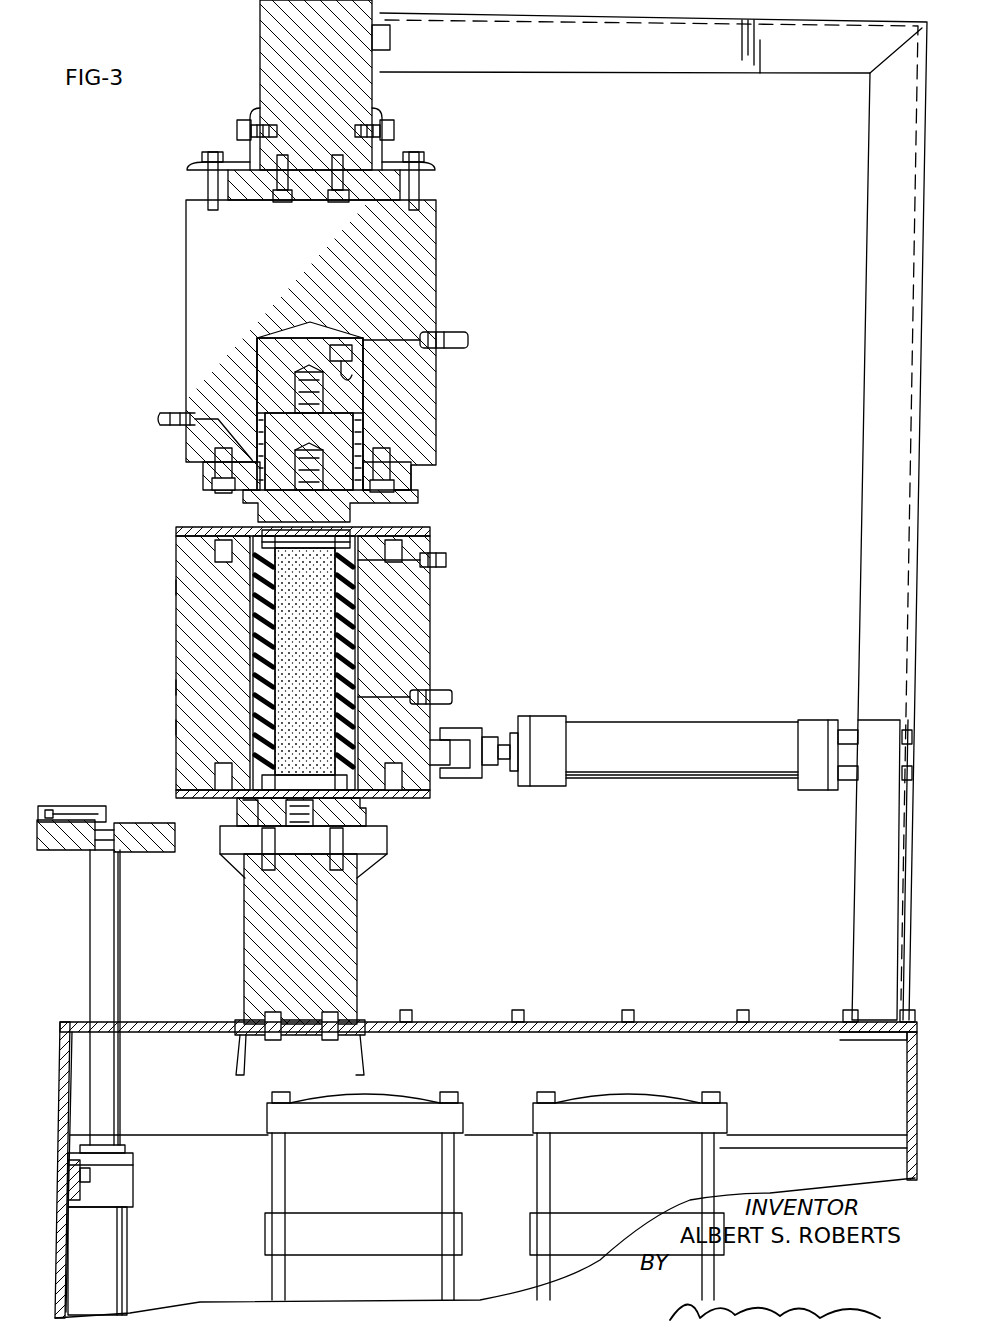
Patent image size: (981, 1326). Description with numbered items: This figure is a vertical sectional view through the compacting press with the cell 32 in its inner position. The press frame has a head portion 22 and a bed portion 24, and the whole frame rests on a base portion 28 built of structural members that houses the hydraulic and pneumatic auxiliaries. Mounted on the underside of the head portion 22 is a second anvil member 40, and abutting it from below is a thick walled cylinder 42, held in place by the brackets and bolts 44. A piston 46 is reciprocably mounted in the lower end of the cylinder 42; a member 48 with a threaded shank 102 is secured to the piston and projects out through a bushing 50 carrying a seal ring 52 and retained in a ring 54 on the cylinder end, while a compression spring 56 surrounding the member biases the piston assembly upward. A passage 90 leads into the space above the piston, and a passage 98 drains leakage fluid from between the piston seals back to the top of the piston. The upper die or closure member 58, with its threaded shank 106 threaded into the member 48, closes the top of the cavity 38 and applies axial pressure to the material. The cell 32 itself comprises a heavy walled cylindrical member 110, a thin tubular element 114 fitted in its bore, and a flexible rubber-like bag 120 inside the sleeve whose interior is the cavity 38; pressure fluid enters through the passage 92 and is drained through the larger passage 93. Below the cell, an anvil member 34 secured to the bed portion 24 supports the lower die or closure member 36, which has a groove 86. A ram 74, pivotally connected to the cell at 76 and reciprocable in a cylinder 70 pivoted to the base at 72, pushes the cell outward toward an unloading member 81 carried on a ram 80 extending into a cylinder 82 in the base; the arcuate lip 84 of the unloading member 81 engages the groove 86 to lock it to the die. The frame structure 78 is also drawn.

The head portion 22 is at (270, 18).
The base portion 24 is at (345, 940).
The base portion 28 is at (60, 1150).
The cell 32 is at (292, 662).
The anvil member 34 is at (372, 848).
The lower die or closure member 36 is at (360, 812).
The cavity 38 is at (284, 615).
The second anvil member 40 is at (380, 185).
The thick walled cylinder 42 is at (428, 250).
The brackets and bolts 44 is at (194, 137).
The piston 46 is at (262, 340).
The member 48 is at (345, 430).
The bushing 50 is at (400, 470).
The seal ring 52 is at (395, 490).
The ring 54 is at (203, 472).
The compression spring 56 is at (360, 445).
The upper die or closure member 58 is at (265, 508).
The cylinder 70 is at (615, 725).
The pivotal connection 72 is at (878, 725).
The ram 74 is at (495, 738).
The pivotal connection 76 is at (460, 730).
The frame 78 is at (862, 575).
The ram 80 is at (110, 943).
The unloading member 81 is at (75, 845).
The cylinder 82 is at (105, 1248).
The arcuate lip 84 is at (58, 812).
The groove 86 is at (250, 806).
The passage 90 is at (452, 340).
The passage 92 is at (462, 564).
The passage 93 is at (395, 695).
The passage 98 is at (365, 383).
The threaded shank 102 is at (300, 392).
The threaded shank 106 is at (300, 465).
The heavy walled cylindrical member 110 is at (185, 655).
The tubular element 114 is at (372, 632).
The flexible rubber-like bag 120 is at (260, 700).